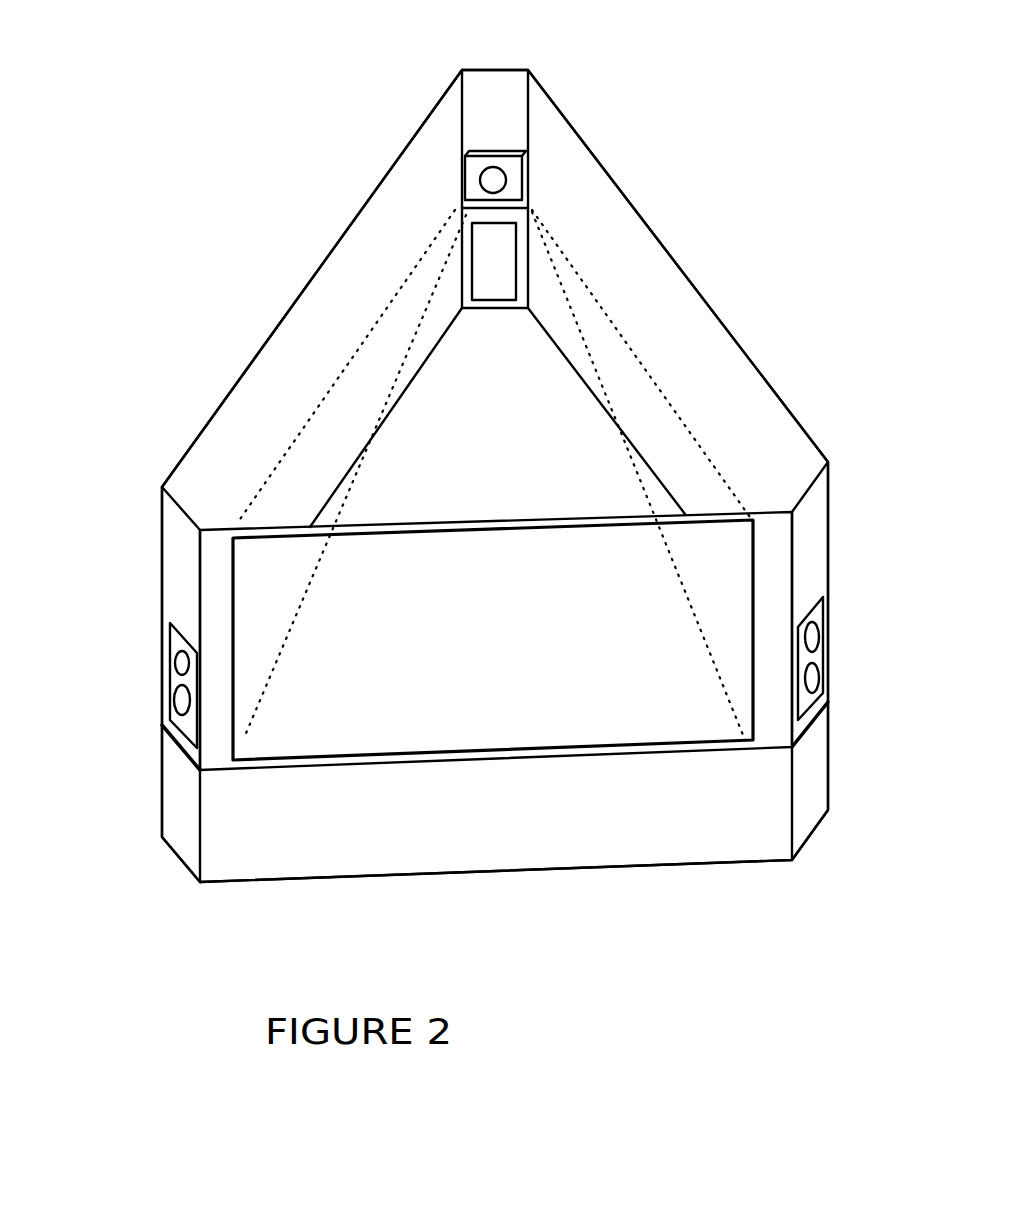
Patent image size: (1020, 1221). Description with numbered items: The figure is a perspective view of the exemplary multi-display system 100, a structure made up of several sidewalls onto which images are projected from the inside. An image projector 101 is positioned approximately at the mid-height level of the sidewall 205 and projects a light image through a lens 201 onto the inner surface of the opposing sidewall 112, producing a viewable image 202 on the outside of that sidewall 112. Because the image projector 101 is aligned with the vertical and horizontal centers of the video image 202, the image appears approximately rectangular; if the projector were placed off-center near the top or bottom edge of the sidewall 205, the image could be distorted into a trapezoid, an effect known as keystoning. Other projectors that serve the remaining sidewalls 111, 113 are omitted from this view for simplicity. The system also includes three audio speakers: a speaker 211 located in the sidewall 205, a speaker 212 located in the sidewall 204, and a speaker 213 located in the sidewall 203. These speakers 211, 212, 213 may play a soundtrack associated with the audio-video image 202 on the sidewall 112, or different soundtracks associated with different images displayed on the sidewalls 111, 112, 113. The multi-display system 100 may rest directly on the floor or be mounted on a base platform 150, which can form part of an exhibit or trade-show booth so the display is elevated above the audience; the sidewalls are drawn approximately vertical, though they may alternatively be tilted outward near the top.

The multi-display system 100 is at (120, 72).
The image projector 101 is at (490, 150).
The sidewall 111 is at (673, 250).
The sidewall 112 is at (212, 566).
The sidewall 113 is at (330, 252).
The base platform 150 is at (236, 851).
The lens 201 is at (512, 173).
The viewable image 202 is at (565, 662).
The sidewall 203 is at (813, 508).
The sidewall 204 is at (178, 582).
The sidewall 205 is at (497, 64).
The audio speaker 211 is at (491, 288).
The audio speaker 212 is at (175, 680).
The audio speaker 213 is at (816, 652).